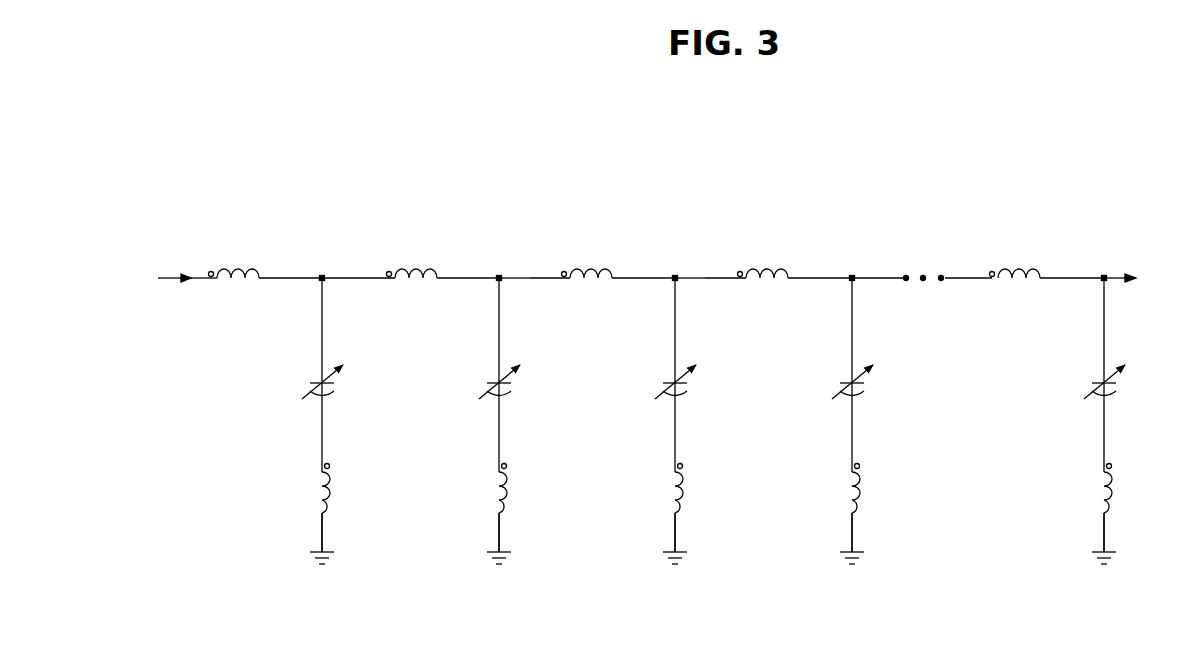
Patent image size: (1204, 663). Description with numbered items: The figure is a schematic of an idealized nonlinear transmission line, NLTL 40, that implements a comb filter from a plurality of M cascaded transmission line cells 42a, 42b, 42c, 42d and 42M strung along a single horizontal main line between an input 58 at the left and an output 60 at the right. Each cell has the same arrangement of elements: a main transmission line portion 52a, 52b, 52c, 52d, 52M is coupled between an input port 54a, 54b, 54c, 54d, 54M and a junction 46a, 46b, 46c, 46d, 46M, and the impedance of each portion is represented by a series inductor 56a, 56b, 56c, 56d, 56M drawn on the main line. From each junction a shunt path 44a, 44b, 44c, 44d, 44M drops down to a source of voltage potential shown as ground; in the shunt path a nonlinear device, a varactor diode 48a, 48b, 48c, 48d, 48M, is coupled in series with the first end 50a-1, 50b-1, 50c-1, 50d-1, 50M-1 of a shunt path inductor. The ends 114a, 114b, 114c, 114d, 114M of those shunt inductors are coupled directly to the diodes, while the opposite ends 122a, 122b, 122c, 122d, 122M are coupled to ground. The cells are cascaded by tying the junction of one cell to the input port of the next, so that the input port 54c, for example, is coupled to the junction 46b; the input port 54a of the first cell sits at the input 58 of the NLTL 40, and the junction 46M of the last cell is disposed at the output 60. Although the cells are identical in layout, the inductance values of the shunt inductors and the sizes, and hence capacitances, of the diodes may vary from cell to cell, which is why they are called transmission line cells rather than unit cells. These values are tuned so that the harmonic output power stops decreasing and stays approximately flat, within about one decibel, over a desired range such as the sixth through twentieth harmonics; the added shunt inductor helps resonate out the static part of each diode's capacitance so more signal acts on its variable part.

The NLTL 40 is at (487, 188).
The input 58 is at (171, 277).
The output 60 is at (1124, 286).
The transmission line cell 42a is at (247, 262).
The transmission line cell 42b is at (424, 262).
The transmission line cell 42c is at (600, 262).
The transmission line cell 42d is at (777, 262).
The transmission line cell 42M is at (1029, 262).
The shunt path 44a is at (322, 513).
The shunt path 44b is at (499, 513).
The shunt path 44c is at (675, 513).
The shunt path 44d is at (852, 513).
The shunt path 44M is at (1104, 513).
The junction 46a is at (322, 277).
The junction 46b is at (499, 277).
The junction 46c is at (676, 277).
The junction 46d is at (852, 277).
The junction 46M is at (1105, 277).
The varactor diode 48a is at (330, 396).
The varactor diode 48b is at (507, 396).
The varactor diode 48c is at (683, 396).
The varactor diode 48d is at (860, 396).
The varactor diode 48M is at (1112, 396).
The first end of shunt path inductor 50a-1 is at (322, 476).
The first end of shunt path inductor 50b-1 is at (499, 476).
The first end of shunt path inductor 50c-1 is at (675, 476).
The first end of shunt path inductor 50d-1 is at (852, 476).
The first end of shunt path inductor 50M-1 is at (1104, 476).
The main transmission line portion 52a is at (283, 277).
The main transmission line portion 52b is at (363, 283).
The main transmission line portion 52c is at (538, 283).
The main transmission line portion 52d is at (716, 283).
The main transmission line portion 52M is at (1067, 277).
The input port 54a is at (206, 276).
The input port 54b is at (345, 277).
The input port 54c is at (518, 277).
The input port 54d is at (695, 277).
The input port 54M is at (968, 283).
The inductor 56a is at (209, 271).
The inductor 56b is at (387, 271).
The inductor 56c is at (562, 271).
The inductor 56d is at (738, 271).
The inductor 56M is at (990, 271).
The end of inductor 114a is at (320, 467).
The end of inductor 114b is at (497, 467).
The end of inductor 114c is at (673, 467).
The end of inductor 114d is at (850, 467).
The end of inductor 114M is at (1102, 467).
The end of inductor 122a is at (322, 513).
The end of inductor 122b is at (499, 513).
The end of inductor 122c is at (675, 513).
The end of inductor 122d is at (852, 513).
The end of inductor 122M is at (1104, 513).